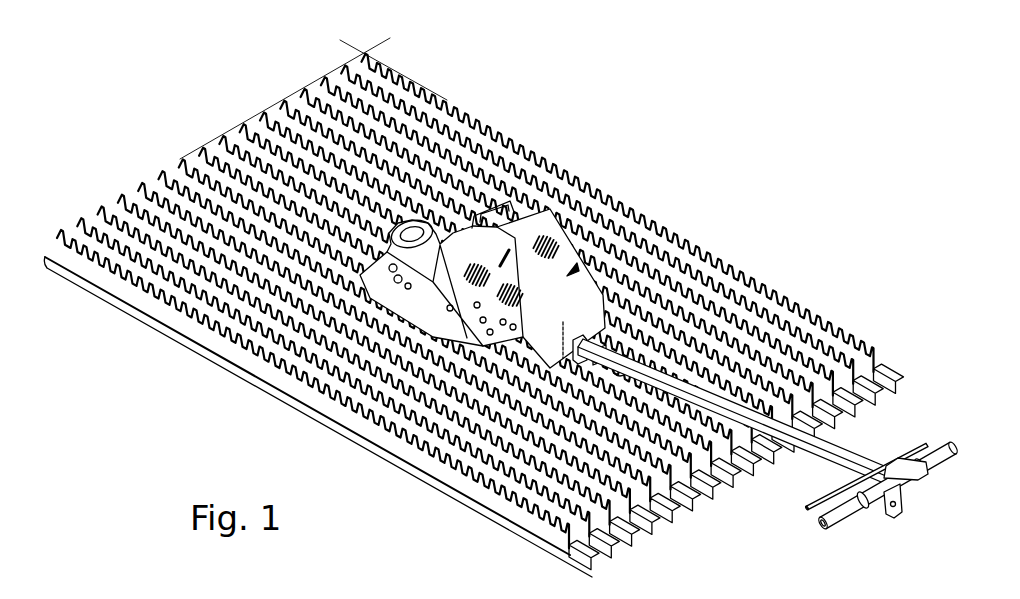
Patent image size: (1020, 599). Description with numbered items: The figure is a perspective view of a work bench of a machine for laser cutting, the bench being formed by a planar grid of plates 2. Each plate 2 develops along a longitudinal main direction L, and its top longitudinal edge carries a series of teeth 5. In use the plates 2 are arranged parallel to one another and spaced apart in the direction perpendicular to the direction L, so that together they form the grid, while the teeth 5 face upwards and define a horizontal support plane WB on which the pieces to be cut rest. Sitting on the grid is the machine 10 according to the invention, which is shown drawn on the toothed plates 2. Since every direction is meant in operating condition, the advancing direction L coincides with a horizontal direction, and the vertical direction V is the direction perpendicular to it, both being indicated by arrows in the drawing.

The plate 2 is at (143, 197).
The teeth 5 is at (705, 234).
The machine 10 is at (605, 243).
The horizontal support plane WB is at (266, 80).
The longitudinal main direction of development L is at (497, 101).
The vertical direction V is at (610, 100).